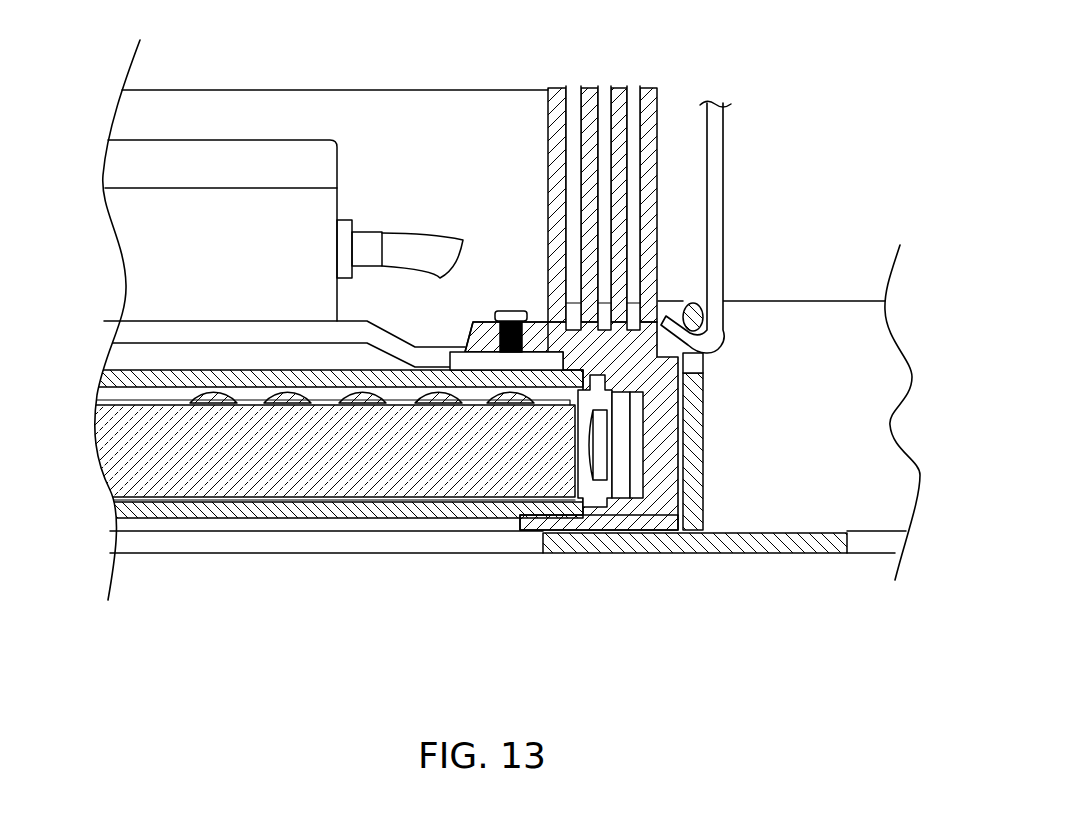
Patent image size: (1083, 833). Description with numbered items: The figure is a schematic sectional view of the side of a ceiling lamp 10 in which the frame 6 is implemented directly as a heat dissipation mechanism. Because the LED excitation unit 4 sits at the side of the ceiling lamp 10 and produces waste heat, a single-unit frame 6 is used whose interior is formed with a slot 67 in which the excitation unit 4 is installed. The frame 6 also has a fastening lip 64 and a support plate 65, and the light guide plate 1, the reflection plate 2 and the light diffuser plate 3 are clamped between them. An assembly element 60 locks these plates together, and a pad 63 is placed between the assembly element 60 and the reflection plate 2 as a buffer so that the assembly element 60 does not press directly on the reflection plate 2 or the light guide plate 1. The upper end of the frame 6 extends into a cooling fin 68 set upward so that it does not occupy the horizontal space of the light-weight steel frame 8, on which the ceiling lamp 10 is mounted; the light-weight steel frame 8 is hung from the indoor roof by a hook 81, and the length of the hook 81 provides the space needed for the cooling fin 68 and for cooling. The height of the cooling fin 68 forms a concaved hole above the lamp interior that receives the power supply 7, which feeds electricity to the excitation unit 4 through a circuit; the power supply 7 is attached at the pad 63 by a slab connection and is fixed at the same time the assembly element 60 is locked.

The light guide plate 1 is at (132, 458).
The reflection plate 2 is at (152, 380).
The light diffuser plate 3 is at (152, 512).
The LED excitation unit 4 is at (633, 455).
The frame 6 is at (622, 512).
The power supply 7 is at (143, 232).
The light-weight steel frame 8 is at (727, 543).
The ceiling lamp 10 is at (279, 577).
The assembly element 60 is at (512, 312).
The pad 63 is at (462, 365).
The fastening lip 64 is at (473, 338).
The support plate 65 is at (535, 530).
The slot 67 is at (650, 430).
The cooling fin 68 is at (657, 112).
The hook 81 is at (723, 167).